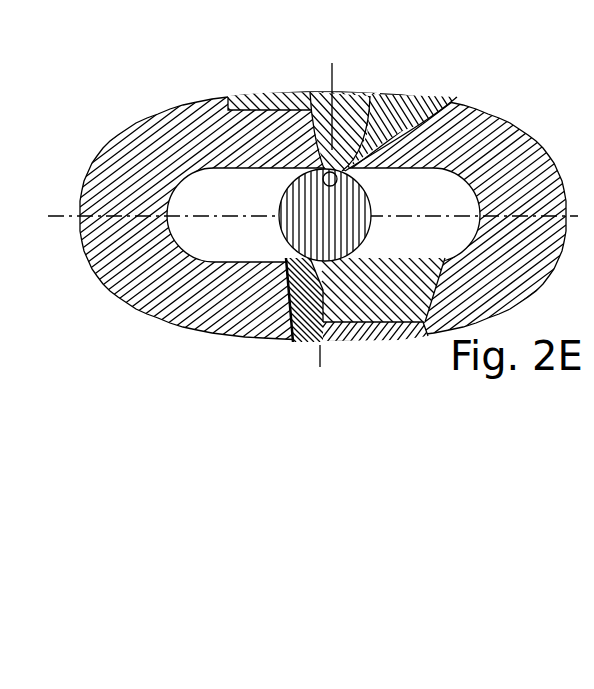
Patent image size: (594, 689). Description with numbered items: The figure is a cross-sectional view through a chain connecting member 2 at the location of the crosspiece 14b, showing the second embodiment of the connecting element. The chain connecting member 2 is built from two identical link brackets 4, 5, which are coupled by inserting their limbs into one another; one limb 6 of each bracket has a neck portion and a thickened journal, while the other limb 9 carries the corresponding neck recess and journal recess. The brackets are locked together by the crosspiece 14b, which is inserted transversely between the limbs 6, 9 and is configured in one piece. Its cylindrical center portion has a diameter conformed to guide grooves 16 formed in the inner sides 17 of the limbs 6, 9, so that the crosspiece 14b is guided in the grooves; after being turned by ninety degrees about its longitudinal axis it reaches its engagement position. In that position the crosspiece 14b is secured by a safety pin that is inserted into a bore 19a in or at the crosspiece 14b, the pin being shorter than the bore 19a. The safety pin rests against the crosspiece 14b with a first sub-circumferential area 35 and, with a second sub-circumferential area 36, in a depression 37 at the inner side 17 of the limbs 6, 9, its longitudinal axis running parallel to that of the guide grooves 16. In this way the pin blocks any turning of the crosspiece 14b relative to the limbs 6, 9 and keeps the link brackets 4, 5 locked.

The chain connecting member 2 is at (553, 107).
The link bracket 4 is at (502, 110).
The link bracket 5 is at (134, 125).
The limb 6 is at (400, 97).
The limb 9 is at (227, 310).
The crosspiece 14b is at (280, 236).
The guide groove 16 is at (291, 341).
The inner side 17 is at (218, 190).
The bore 19a is at (452, 108).
The first sub-circumferential area 35 is at (337, 180).
The second sub-circumferential area 36 is at (355, 97).
The depression 37 is at (310, 92).